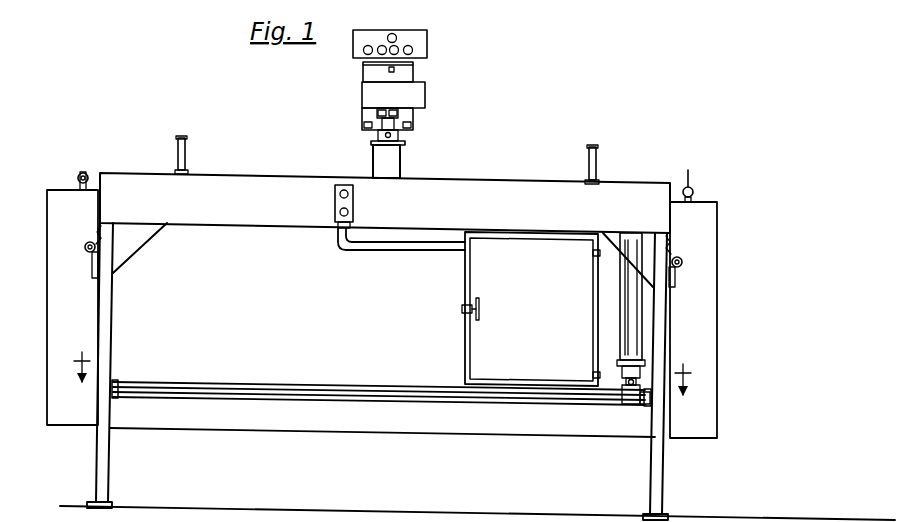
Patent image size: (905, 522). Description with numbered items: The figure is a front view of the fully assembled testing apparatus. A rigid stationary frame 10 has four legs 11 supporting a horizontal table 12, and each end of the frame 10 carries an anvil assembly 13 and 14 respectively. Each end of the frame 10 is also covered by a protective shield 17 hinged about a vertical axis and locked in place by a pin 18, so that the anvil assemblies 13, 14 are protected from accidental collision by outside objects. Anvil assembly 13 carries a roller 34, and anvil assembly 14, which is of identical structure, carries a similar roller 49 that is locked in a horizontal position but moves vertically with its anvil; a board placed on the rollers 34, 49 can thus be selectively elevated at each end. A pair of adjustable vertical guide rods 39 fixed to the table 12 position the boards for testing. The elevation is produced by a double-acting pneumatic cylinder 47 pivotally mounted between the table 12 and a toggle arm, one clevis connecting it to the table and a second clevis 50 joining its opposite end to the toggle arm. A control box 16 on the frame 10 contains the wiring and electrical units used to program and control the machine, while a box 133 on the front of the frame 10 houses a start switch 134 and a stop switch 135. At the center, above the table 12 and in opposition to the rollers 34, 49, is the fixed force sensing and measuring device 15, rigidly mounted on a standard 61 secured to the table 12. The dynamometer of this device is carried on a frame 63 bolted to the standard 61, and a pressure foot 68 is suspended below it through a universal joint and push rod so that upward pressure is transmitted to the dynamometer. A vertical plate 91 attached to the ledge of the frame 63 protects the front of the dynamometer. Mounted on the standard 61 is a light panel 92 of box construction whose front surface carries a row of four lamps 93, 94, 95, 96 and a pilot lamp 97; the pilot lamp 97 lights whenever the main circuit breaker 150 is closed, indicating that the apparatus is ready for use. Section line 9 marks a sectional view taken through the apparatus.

The section line 9- 9 is at (382, 385).
The frame 10 is at (136, 160).
The legs 11 is at (109, 473).
The table 12 is at (468, 180).
The anvil assembly 13 is at (696, 190).
The anvil assembly 14 is at (78, 172).
The force sensing and measuring device 15 is at (430, 118).
The control box 16 is at (531, 309).
The shield 17 is at (47, 313).
The pin 18 is at (85, 247).
The roller 34 is at (683, 169).
The vertical guide rods 39 is at (186, 150).
The pneumatic cylinder 47 is at (620, 330).
The roller 49 is at (86, 170).
The second clevis 50 is at (625, 386).
The standard 61 is at (401, 165).
The frame 63 is at (414, 78).
The pressure foot 68 is at (371, 143).
The vertical plate 91 is at (393, 95).
The light panel 92 is at (428, 42).
The lamp 93 is at (363, 49).
The lamp 94 is at (378, 55).
The lamp 95 is at (398, 47).
The lamp 96 is at (412, 52).
The pilot lamp 97 is at (394, 34).
The box 133 is at (355, 208).
The start switch 134 is at (339, 193).
The stop switch 135 is at (339, 213).
The main circuit breaker 150 is at (464, 258).